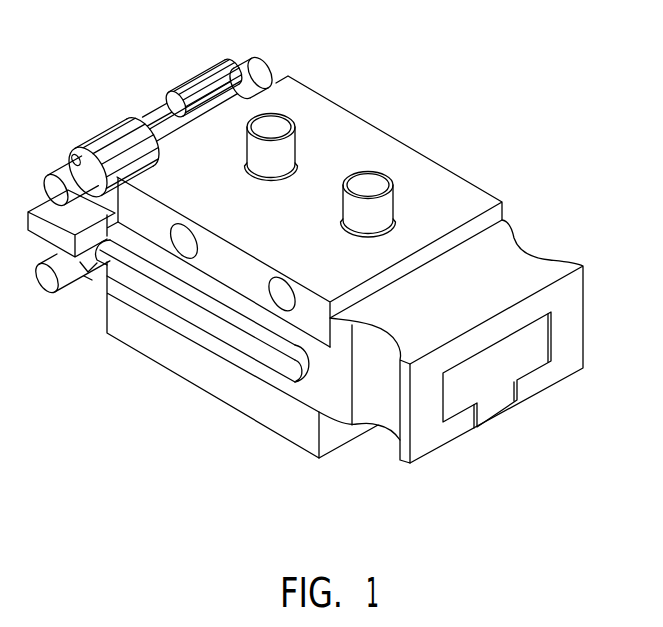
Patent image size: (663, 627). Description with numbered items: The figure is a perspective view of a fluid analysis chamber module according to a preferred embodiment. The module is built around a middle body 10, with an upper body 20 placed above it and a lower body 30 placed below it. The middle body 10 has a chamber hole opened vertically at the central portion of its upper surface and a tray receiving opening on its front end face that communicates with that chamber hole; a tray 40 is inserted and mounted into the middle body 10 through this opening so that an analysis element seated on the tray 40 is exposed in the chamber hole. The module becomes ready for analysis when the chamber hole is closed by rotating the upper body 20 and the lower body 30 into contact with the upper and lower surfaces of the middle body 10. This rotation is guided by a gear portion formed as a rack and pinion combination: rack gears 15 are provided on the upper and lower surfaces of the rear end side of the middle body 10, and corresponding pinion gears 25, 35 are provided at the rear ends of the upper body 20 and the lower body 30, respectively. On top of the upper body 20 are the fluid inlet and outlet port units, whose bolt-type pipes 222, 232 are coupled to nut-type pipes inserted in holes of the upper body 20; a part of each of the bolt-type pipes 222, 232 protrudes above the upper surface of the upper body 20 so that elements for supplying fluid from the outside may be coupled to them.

The middle body 10 is at (334, 276).
The rack gears 15 is at (87, 188).
The upper body 20 is at (309, 180).
The pinion gear 25 is at (102, 130).
The lower body 30 is at (219, 357).
The pinion gear 35 is at (78, 286).
The tray 40 is at (505, 424).
The bolt-type pipe 222 is at (398, 210).
The bolt-type pipe 232 is at (298, 157).